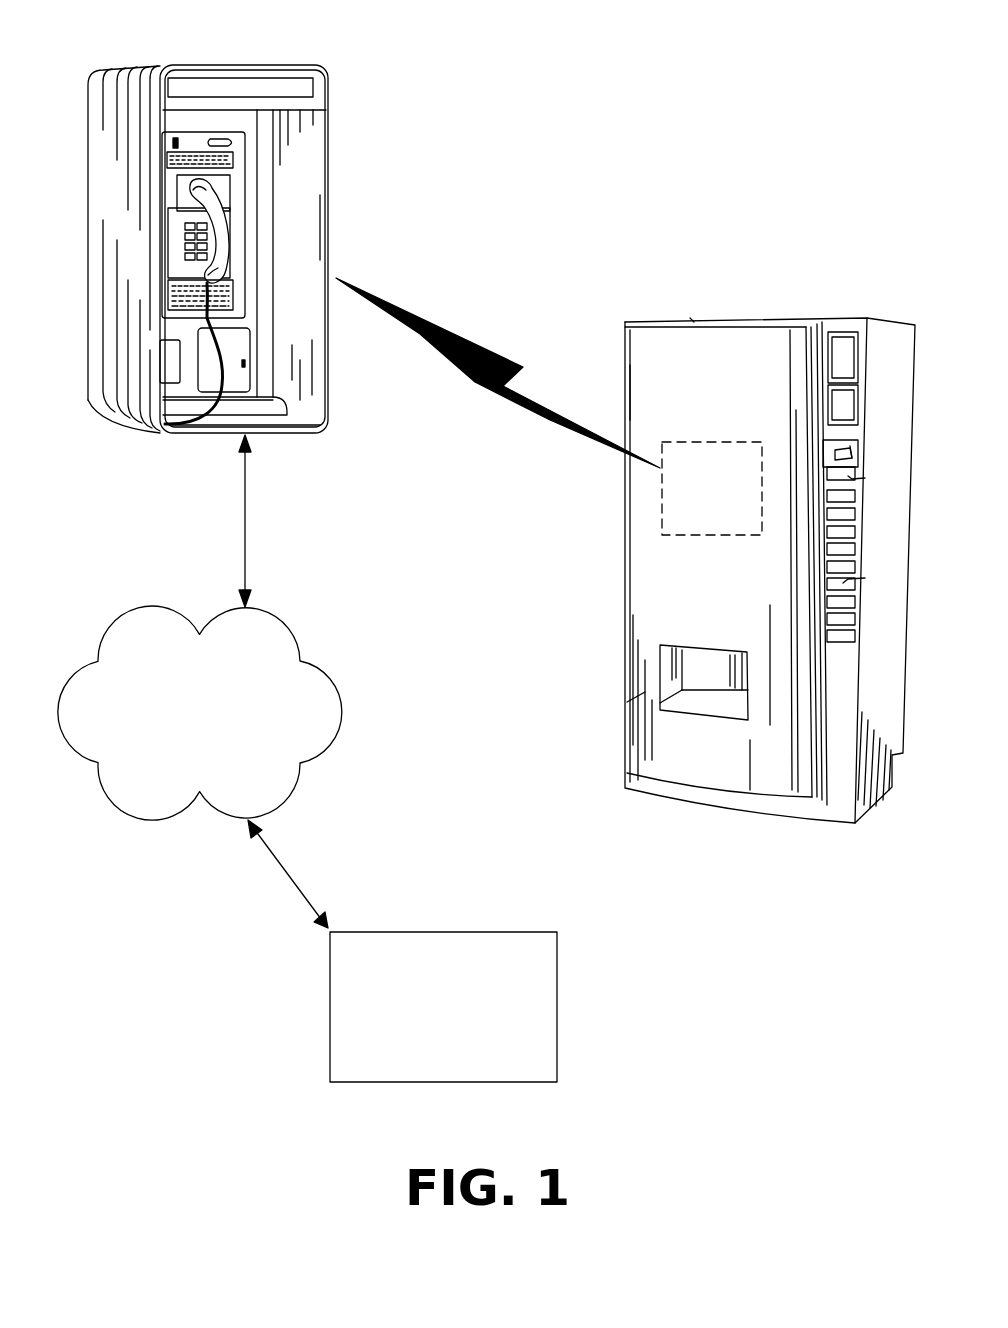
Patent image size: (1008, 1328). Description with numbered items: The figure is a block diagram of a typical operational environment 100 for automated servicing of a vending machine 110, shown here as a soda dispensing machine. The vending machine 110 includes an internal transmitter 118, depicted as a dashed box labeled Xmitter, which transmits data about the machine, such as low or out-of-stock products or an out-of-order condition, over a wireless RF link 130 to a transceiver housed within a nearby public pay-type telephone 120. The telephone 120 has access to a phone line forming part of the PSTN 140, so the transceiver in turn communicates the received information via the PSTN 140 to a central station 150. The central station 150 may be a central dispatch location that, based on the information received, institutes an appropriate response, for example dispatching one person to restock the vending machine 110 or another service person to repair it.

The operational environment 100 is at (567, 145).
The vending machine 110 is at (712, 314).
The internal transmitter 118 is at (672, 442).
The public pay-type telephone 120 is at (322, 66).
The RF link 130 is at (472, 340).
The PSTN 140 is at (328, 667).
The central station 150 is at (420, 930).